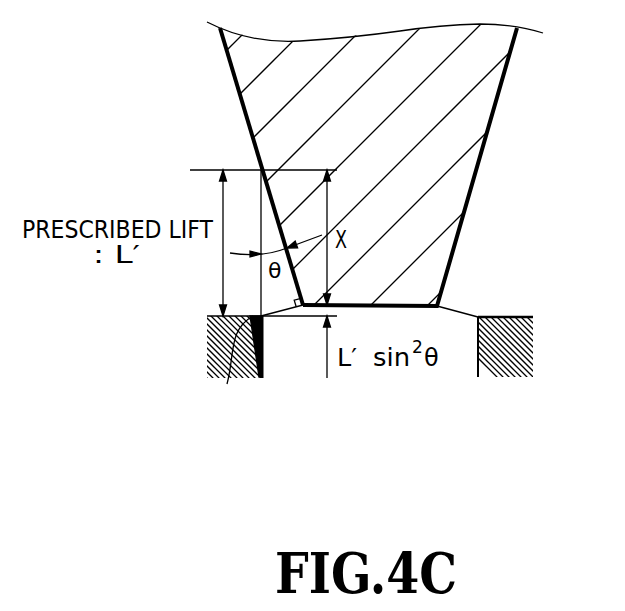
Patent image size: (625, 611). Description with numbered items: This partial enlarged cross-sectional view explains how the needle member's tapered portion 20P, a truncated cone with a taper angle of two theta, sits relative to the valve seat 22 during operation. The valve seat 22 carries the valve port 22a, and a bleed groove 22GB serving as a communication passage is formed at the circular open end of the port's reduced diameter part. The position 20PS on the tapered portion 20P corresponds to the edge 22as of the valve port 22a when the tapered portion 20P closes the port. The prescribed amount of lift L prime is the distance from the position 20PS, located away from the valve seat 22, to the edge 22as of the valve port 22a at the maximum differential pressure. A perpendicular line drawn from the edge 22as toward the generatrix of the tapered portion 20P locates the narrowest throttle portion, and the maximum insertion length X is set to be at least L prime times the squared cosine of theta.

The tapered portion 20P is at (487, 83).
The position 20PS is at (260, 168).
The valve seat 22 is at (212, 352).
The valve port 22a is at (262, 340).
The bleed groove 22GB is at (228, 378).
The edge 22as is at (479, 316).